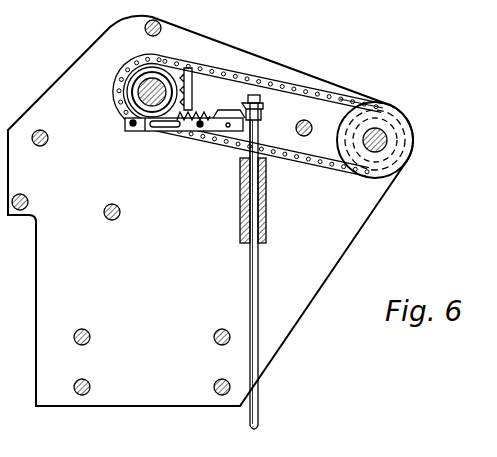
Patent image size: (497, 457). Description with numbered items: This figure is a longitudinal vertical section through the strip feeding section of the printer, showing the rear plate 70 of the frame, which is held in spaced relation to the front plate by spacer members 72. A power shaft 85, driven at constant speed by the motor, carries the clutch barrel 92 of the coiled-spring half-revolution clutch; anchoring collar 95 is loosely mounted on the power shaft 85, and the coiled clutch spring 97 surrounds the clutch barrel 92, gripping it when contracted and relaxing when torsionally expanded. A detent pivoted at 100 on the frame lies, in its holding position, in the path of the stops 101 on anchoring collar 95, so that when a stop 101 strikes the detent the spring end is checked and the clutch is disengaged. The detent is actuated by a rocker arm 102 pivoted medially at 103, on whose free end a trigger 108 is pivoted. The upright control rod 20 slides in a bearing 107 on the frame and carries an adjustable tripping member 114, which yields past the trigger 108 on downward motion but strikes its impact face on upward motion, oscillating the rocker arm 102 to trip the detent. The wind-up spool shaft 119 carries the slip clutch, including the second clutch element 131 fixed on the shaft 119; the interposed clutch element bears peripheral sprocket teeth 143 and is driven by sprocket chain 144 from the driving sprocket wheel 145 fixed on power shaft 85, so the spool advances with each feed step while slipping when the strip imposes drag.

The control rod 20 is at (256, 287).
The rear plate 70 is at (348, 236).
The spacer members 72 is at (104, 212).
The power shaft 85 is at (160, 80).
The clutch barrel 92 is at (130, 63).
The anchoring collar 95 is at (122, 84).
The coiled clutch spring 97 is at (135, 99).
The detent pivot 100 is at (131, 128).
The stops 101 is at (166, 58).
The rocker arm 102 is at (184, 133).
The rocker arm pivot 103 is at (199, 133).
The bearing 107 is at (240, 214).
The trigger 108 is at (258, 130).
The tripping member 114 is at (262, 113).
The shaft 119 is at (388, 140).
The second clutch element 131 is at (390, 112).
The sprocket teeth 143 is at (356, 112).
The sprocket chain 144 is at (252, 80).
The driving sprocket wheel 145 is at (194, 76).